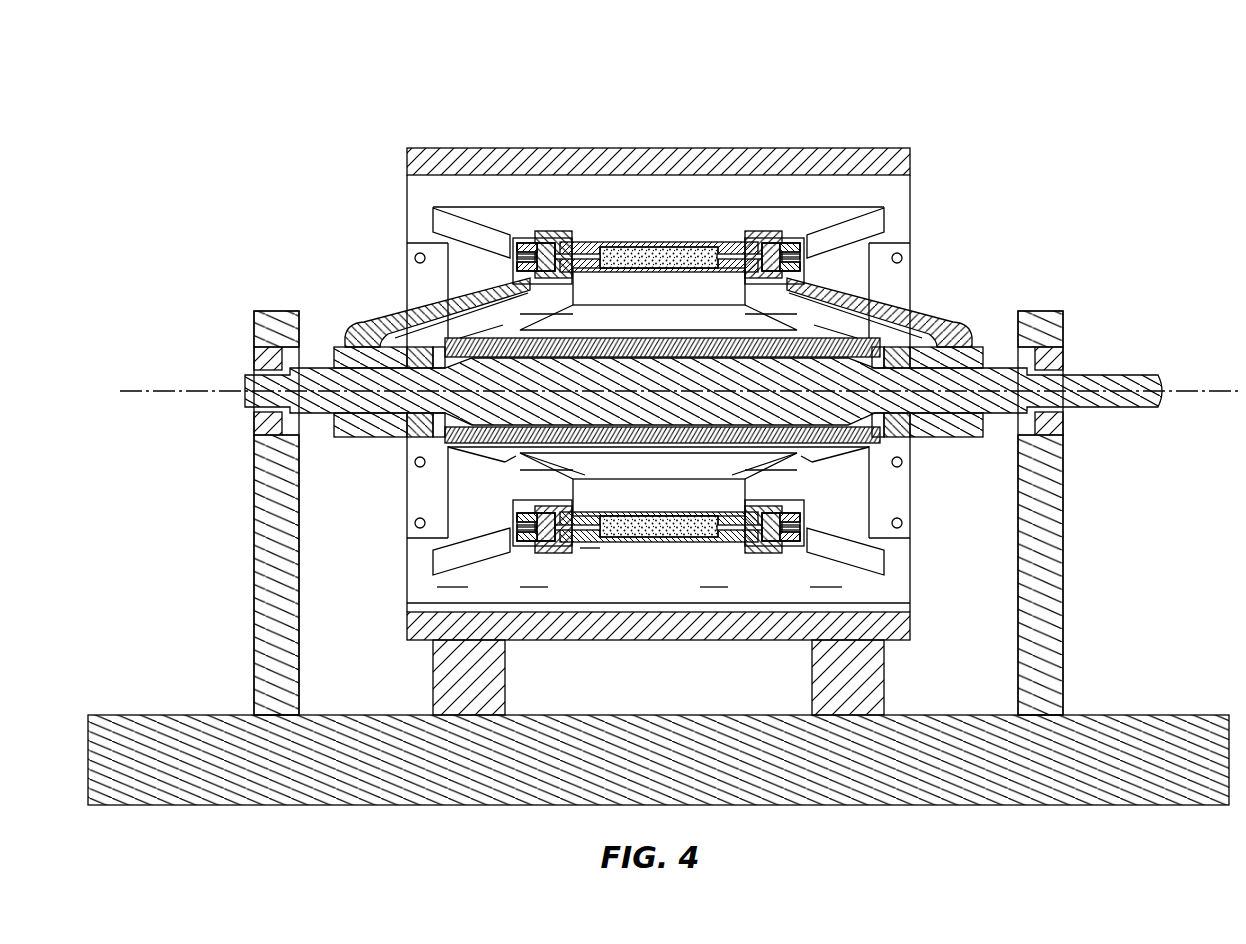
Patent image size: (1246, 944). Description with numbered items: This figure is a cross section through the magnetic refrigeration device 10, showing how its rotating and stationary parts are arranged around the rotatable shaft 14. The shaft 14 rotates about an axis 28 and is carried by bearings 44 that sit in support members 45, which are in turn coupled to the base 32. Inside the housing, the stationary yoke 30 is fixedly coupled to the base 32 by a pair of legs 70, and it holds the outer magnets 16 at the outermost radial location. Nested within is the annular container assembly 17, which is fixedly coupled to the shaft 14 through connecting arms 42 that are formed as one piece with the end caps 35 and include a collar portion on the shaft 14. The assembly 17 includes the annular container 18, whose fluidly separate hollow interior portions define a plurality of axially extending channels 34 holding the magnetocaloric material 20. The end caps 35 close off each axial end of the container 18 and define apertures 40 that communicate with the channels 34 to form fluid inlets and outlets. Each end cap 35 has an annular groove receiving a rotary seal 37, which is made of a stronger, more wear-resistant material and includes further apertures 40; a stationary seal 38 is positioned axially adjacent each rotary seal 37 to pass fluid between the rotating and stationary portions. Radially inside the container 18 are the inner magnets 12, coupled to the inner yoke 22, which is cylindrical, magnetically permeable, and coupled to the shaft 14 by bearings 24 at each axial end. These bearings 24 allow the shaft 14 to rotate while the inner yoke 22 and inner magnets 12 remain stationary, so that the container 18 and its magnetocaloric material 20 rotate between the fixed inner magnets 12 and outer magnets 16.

The magnetic refrigeration device 10 is at (990, 131).
The inner magnets 12 is at (690, 310).
The rotatable shaft 14 is at (1140, 375).
The outer magnets 16 is at (840, 212).
The annular container assembly 17 is at (588, 548).
The annular container 18 is at (585, 244).
The magnetocaloric material 20 is at (600, 252).
The inner yoke 22 is at (668, 340).
The bearings 24 is at (420, 347).
The axis 28 is at (1222, 386).
The stationary yoke 30 is at (437, 148).
The base 32 is at (1143, 715).
The channels 34 is at (640, 250).
The end caps 35 is at (550, 236).
The rotary seal 37 is at (538, 244).
The stationary seal 38 is at (520, 245).
The apertures 40 is at (537, 257).
The connecting arms 42 is at (865, 300).
The bearings 44 is at (265, 356).
The support members 45 is at (263, 456).
The legs 70 is at (440, 692).